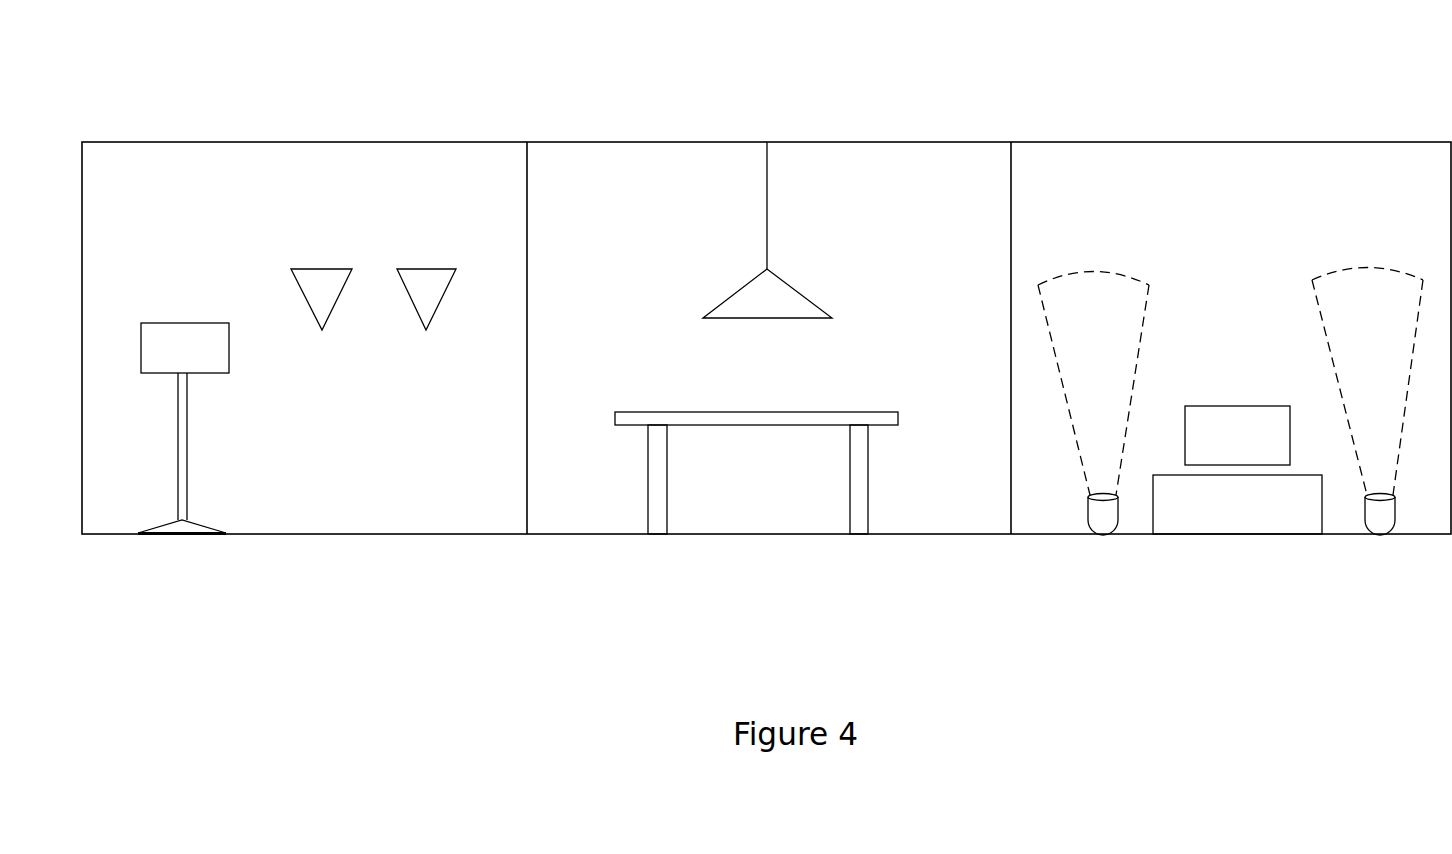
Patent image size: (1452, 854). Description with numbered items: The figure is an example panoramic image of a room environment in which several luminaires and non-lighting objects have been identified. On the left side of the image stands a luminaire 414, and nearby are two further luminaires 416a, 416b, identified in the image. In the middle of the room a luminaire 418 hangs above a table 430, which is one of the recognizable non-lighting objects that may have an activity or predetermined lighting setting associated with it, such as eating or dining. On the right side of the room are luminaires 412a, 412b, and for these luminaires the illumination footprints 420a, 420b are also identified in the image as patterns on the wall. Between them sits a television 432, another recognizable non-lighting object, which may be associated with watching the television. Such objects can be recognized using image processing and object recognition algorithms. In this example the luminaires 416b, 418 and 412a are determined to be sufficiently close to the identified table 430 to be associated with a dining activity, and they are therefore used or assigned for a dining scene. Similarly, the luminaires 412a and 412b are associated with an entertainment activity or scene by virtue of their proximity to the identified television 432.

The luminaire 414 is at (184, 345).
The luminaire 416a is at (321, 293).
The luminaire 416b is at (433, 293).
The luminaire 418 is at (752, 295).
The illumination footprint 420a is at (1094, 293).
The illumination footprint 420b is at (1365, 297).
The luminaire 412a is at (1105, 522).
The luminaire 412b is at (1382, 522).
The table 430 is at (637, 427).
The television 432 is at (1231, 443).